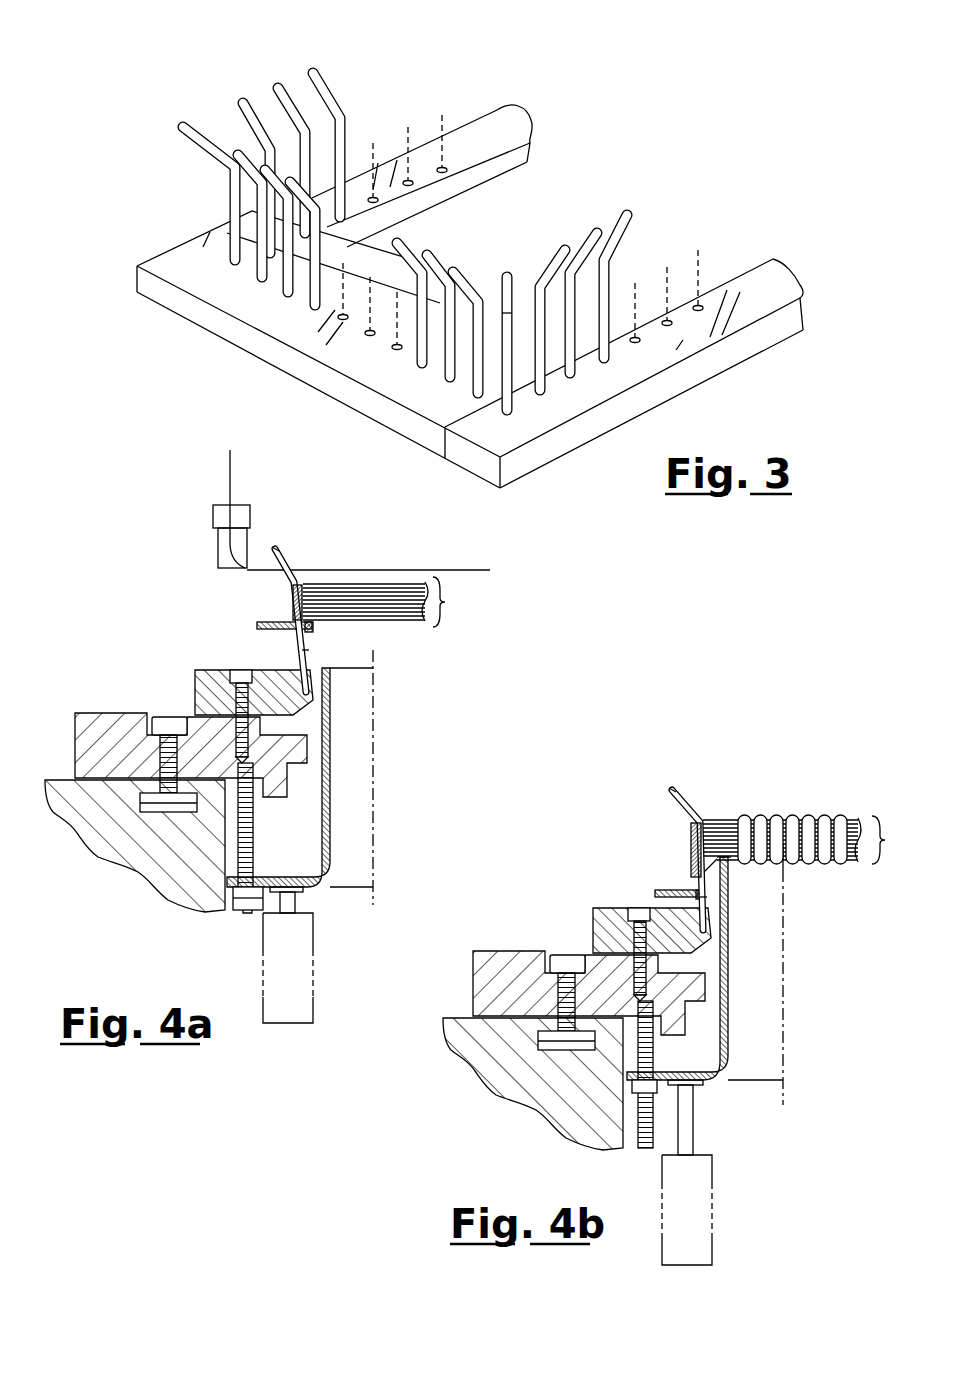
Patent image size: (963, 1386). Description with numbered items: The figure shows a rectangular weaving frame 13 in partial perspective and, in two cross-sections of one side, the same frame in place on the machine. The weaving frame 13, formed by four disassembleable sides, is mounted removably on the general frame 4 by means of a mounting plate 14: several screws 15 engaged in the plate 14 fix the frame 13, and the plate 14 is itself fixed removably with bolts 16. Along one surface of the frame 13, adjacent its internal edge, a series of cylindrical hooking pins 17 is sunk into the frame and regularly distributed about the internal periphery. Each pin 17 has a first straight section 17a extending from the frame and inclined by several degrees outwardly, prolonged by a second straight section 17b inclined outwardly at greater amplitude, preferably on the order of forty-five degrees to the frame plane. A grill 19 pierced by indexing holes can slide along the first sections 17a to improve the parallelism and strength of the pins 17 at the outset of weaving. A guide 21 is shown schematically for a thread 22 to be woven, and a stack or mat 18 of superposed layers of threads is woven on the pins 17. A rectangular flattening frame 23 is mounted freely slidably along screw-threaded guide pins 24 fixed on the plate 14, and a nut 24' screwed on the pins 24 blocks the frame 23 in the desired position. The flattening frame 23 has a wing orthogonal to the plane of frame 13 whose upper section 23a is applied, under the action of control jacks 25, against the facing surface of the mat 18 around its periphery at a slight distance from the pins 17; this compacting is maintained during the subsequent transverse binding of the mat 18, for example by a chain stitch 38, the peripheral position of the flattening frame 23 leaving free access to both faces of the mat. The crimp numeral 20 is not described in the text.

In FIG. 4A, the general frame 4 is at (62, 776).
In FIG. 4B, the general frame 4 is at (452, 1015).
In FIG. 3, the weaving frame 13 is at (283, 365).
In FIG. 4A, the weaving frame 13 is at (202, 668).
In FIG. 4B, the weaving frame 13 is at (593, 902).
In FIG. 4A, the mounting plate 14 is at (115, 710).
In FIG. 4B, the mounting plate 14 is at (497, 950).
In FIG. 4A, the screws 15 is at (238, 670).
In FIG. 4B, the screws 15 is at (633, 905).
In FIG. 4A, the bolts 16 is at (172, 718).
In FIG. 4B, the bolts 16 is at (570, 953).
In FIG. 3, the hooking pins 17 is at (183, 118).
In FIG. 4A, the hooking pins 17 is at (276, 541).
In FIG. 4B, the hooking pins 17 is at (660, 801).
In FIG. 3, the first straight section 17a is at (227, 236).
In FIG. 4A, the first straight section 17a is at (304, 650).
In FIG. 4B, the first straight section 17a is at (707, 897).
In FIG. 3, the second straight section 17b is at (184, 130).
In FIG. 4A, the second straight section 17b is at (283, 556).
In FIG. 4B, the second straight section 17b is at (682, 793).
In FIG. 4A, the mat 18 is at (389, 602).
In FIG. 4B, the mat 18 is at (807, 845).
In FIG. 4A, the grill 19 is at (259, 621).
In FIG. 4B, the grill 19 is at (680, 888).
In FIG. 3, the crimp connection 20 is at (352, 106).
In FIG. 4A, the crimp connection 20 is at (288, 585).
In FIG. 4B, the crimp connection 20 is at (710, 806).
In FIG. 4A, the guide 21 is at (213, 518).
In FIG. 4A, the thread 22 is at (230, 456).
In FIG. 4A, the flattening frame 23 is at (334, 752).
In FIG. 4B, the flattening frame 23 is at (740, 1005).
In FIG. 4A, the upper section 23a is at (318, 668).
In FIG. 4B, the upper section 23a is at (727, 877).
In FIG. 4A, the guide pins 24 is at (329, 833).
In FIG. 4B, the guide pins 24 is at (677, 1074).
In FIG. 4A, the nut 24' is at (215, 916).
In FIG. 4B, the nut 24' is at (704, 1109).
In FIG. 4A, the control jacks 25 is at (260, 992).
In FIG. 4B, the control jacks 25 is at (722, 1165).
In FIG. 4B, the chain stitch 38 is at (815, 808).